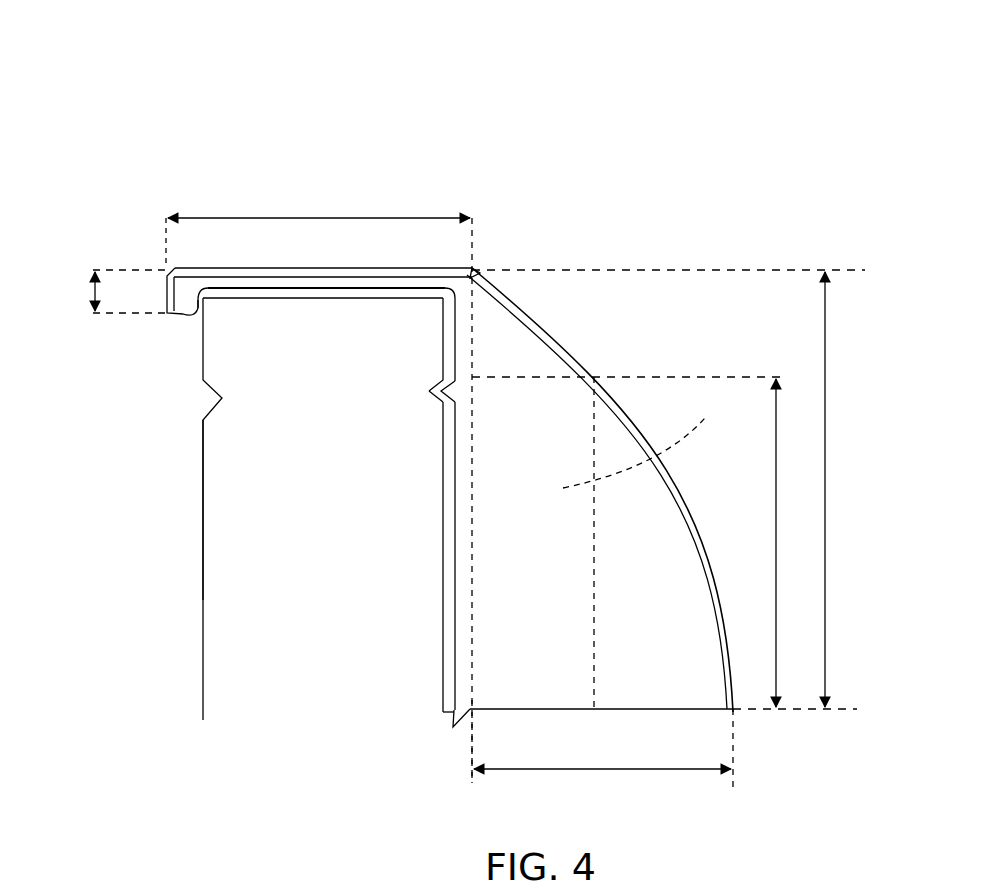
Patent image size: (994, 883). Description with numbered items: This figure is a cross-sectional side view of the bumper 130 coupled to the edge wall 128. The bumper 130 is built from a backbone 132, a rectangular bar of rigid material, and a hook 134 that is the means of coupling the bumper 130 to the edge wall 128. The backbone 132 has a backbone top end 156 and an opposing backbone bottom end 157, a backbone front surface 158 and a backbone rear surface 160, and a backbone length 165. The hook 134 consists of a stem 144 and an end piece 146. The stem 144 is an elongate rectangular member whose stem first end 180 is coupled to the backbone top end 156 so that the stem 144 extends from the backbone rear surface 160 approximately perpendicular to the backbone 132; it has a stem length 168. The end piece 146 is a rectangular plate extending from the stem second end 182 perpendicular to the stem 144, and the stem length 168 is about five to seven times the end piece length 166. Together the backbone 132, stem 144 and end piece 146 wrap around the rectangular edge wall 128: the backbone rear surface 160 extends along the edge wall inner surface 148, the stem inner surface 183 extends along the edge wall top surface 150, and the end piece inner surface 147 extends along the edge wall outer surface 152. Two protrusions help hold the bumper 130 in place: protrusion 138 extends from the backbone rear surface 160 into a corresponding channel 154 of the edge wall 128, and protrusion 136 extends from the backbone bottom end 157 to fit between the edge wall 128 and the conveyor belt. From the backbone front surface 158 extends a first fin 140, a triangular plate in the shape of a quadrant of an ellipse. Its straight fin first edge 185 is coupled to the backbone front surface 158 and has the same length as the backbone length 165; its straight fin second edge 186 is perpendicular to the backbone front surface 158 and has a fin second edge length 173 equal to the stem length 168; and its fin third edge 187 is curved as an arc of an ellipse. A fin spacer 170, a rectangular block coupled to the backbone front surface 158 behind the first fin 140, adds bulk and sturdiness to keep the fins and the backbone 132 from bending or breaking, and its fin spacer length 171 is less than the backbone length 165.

The edge wall 128 is at (272, 575).
The bumper 130 is at (512, 133).
The backbone 132 is at (460, 340).
The hook 134 is at (332, 164).
The protrusion 136 is at (457, 713).
The protrusion 138 is at (434, 397).
The first fin 140 is at (690, 598).
The stem 144 is at (376, 285).
The end piece 146 is at (178, 297).
The end piece inner surface 147 is at (200, 318).
The edge wall inner surface 148 is at (443, 607).
The edge wall top surface 150 is at (310, 299).
The edge wall outer surface 152 is at (203, 522).
The channel 154 is at (437, 385).
The backbone top end 156 is at (474, 271).
The backbone bottom end 157 is at (462, 700).
The backbone front surface 158 is at (472, 368).
The backbone rear surface 160 is at (453, 482).
The backbone length 165 is at (860, 376).
The end piece length 166 is at (93, 300).
The stem length 168 is at (298, 218).
The fin spacer 170 is at (652, 446).
The fin spacer length 171 is at (775, 495).
The fin second edge length 173 is at (658, 770).
The stem first end 180 is at (460, 291).
The stem second end 182 is at (190, 270).
The stem inner surface 183 is at (243, 288).
The fin first edge 185 is at (490, 693).
The fin second edge 186 is at (533, 710).
The fin third edge 187 is at (697, 528).